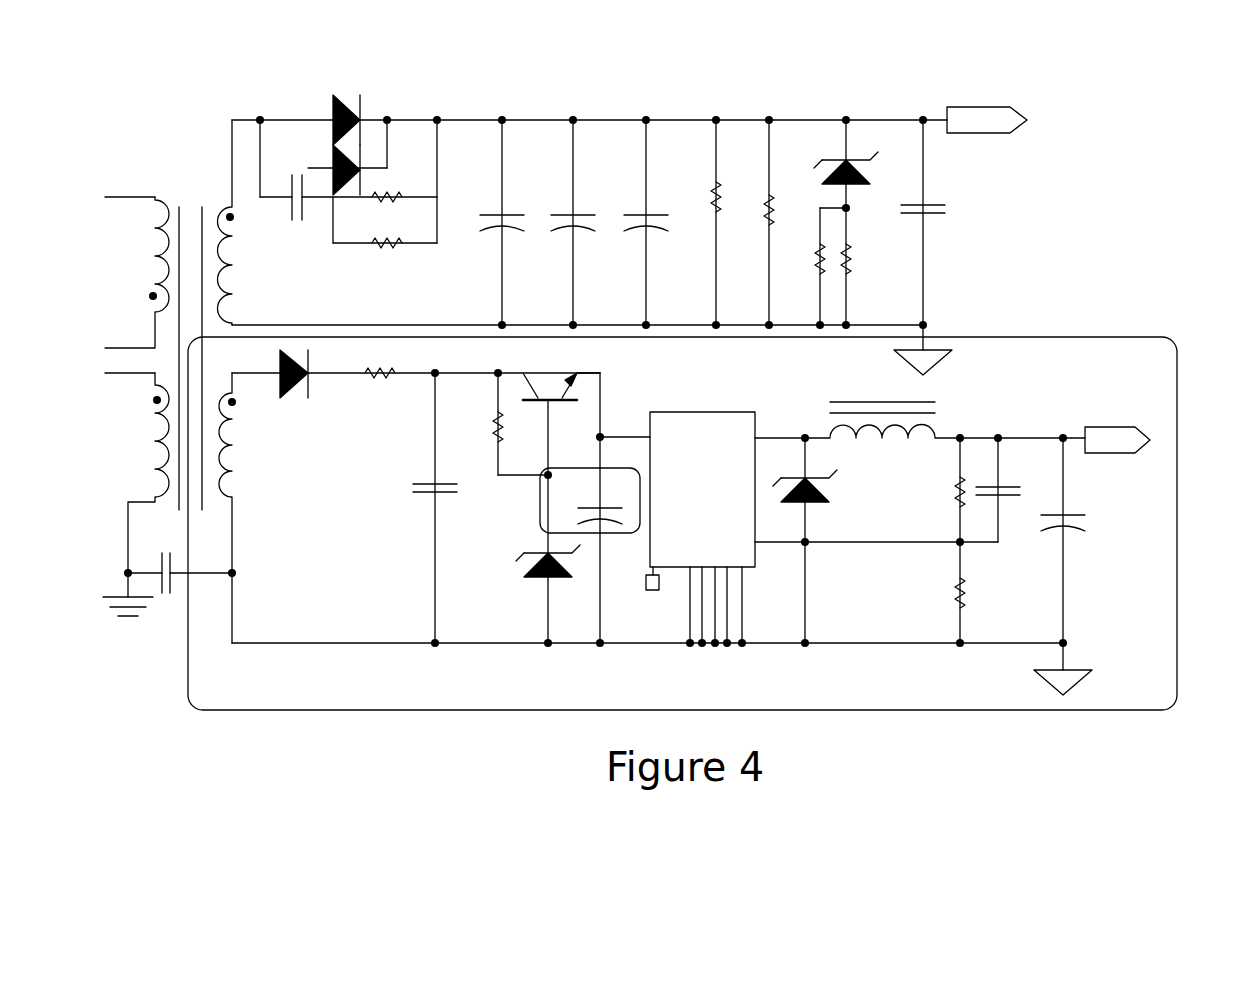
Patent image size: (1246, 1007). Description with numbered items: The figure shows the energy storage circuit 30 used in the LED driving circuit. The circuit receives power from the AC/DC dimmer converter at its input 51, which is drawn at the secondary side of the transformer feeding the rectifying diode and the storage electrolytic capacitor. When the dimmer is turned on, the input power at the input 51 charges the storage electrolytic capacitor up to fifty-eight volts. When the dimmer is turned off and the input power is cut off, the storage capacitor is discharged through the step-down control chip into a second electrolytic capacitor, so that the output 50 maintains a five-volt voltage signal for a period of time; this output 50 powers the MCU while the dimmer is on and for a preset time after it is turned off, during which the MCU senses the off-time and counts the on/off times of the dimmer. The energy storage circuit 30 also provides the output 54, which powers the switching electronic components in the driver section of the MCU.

The energy storage circuit 30 is at (1132, 218).
The input S_I 51 is at (247, 417).
The output S_X 54 is at (987, 213).
The output S_O 50 is at (1163, 437).